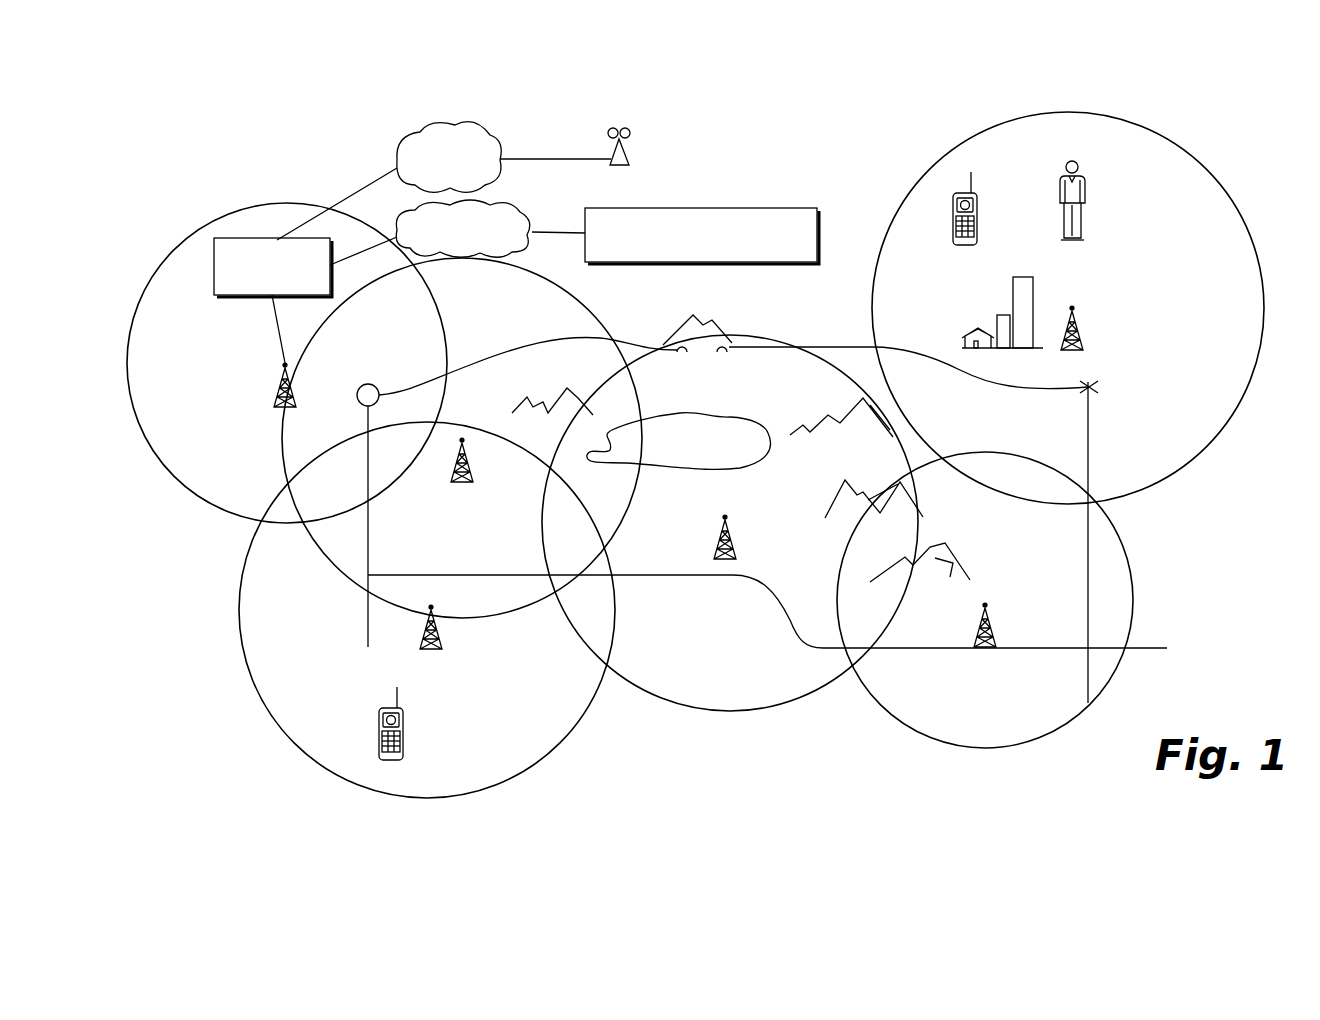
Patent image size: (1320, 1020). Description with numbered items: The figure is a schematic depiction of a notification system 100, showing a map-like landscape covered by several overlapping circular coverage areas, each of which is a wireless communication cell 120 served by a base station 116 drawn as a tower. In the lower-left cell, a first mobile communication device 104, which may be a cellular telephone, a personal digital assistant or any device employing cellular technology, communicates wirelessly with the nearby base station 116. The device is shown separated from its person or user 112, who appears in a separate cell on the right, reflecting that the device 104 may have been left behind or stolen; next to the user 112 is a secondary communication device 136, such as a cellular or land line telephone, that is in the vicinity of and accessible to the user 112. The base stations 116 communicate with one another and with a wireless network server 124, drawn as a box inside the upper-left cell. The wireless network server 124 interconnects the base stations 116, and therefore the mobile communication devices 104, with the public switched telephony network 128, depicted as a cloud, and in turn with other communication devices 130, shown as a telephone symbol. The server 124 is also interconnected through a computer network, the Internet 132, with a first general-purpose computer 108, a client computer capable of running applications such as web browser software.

The notification system 100 is at (247, 143).
The first mobile communication device 104 is at (380, 727).
The first general-purpose computer 108 is at (713, 208).
The user 112 is at (1082, 217).
The base station 116 is at (280, 378).
The wireless communication cell 120 is at (513, 782).
The wireless network server 124 is at (258, 293).
The public switched telephony network 128 is at (483, 128).
The other communication devices 130 is at (657, 142).
The Internet 132 is at (493, 199).
The secondary communication device 136 is at (953, 215).